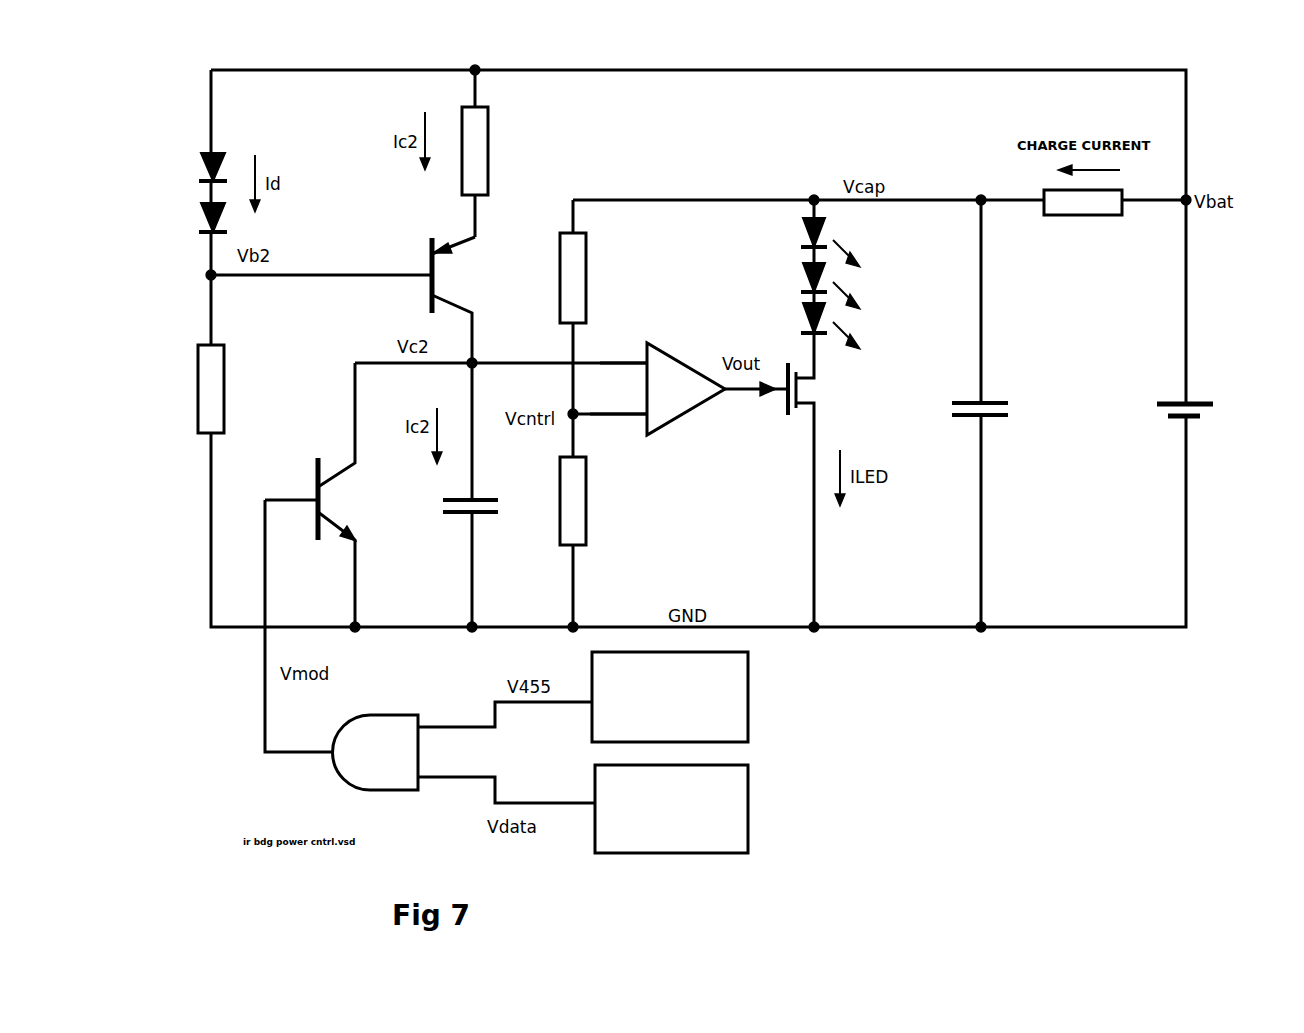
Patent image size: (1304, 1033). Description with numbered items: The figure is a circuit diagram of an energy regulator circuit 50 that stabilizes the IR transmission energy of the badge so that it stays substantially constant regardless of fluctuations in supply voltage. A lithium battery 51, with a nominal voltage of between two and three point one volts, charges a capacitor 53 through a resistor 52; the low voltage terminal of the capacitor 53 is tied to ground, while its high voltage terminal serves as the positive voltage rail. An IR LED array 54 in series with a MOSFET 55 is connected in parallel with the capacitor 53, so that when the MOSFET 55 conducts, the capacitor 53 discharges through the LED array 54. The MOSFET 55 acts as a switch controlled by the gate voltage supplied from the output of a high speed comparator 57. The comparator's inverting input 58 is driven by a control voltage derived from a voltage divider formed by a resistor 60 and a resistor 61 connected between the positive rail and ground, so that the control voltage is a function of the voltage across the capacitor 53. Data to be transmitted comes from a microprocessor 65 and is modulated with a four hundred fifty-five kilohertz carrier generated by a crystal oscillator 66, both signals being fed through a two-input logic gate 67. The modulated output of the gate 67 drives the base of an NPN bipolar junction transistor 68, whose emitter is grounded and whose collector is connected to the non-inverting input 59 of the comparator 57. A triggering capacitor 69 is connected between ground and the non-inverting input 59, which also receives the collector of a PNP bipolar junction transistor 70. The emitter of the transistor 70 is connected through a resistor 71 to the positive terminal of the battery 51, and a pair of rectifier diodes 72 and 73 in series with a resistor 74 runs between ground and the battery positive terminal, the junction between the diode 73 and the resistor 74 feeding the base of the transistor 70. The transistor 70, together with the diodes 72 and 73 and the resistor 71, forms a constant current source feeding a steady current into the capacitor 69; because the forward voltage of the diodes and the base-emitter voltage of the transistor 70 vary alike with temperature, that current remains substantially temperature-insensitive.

The energy regulator circuit 50 is at (950, 735).
The lithium battery 51 is at (1195, 420).
The resistor 52 is at (1076, 217).
The capacitor 53 is at (995, 401).
The IR LED array 54 is at (806, 246).
The MOSFET 55 is at (812, 380).
The high speed comparator 57 is at (681, 358).
The inverting input 58 is at (603, 420).
The non-inverting input 59 is at (608, 358).
The resistor 60 is at (587, 532).
The resistor 61 is at (587, 268).
The microprocessor 65 is at (750, 812).
The crystal oscillator 66 is at (750, 705).
The 2-input AND gate 67 is at (382, 792).
The NPN bipolar junction transistor 68 is at (345, 475).
The capacitor 69 is at (478, 497).
The PNP bipolar junction transistor 70 is at (465, 300).
The resistor 71 is at (488, 150).
The rectifier diode 72 is at (207, 150).
The rectifier diode 73 is at (199, 233).
The resistor 74 is at (198, 400).